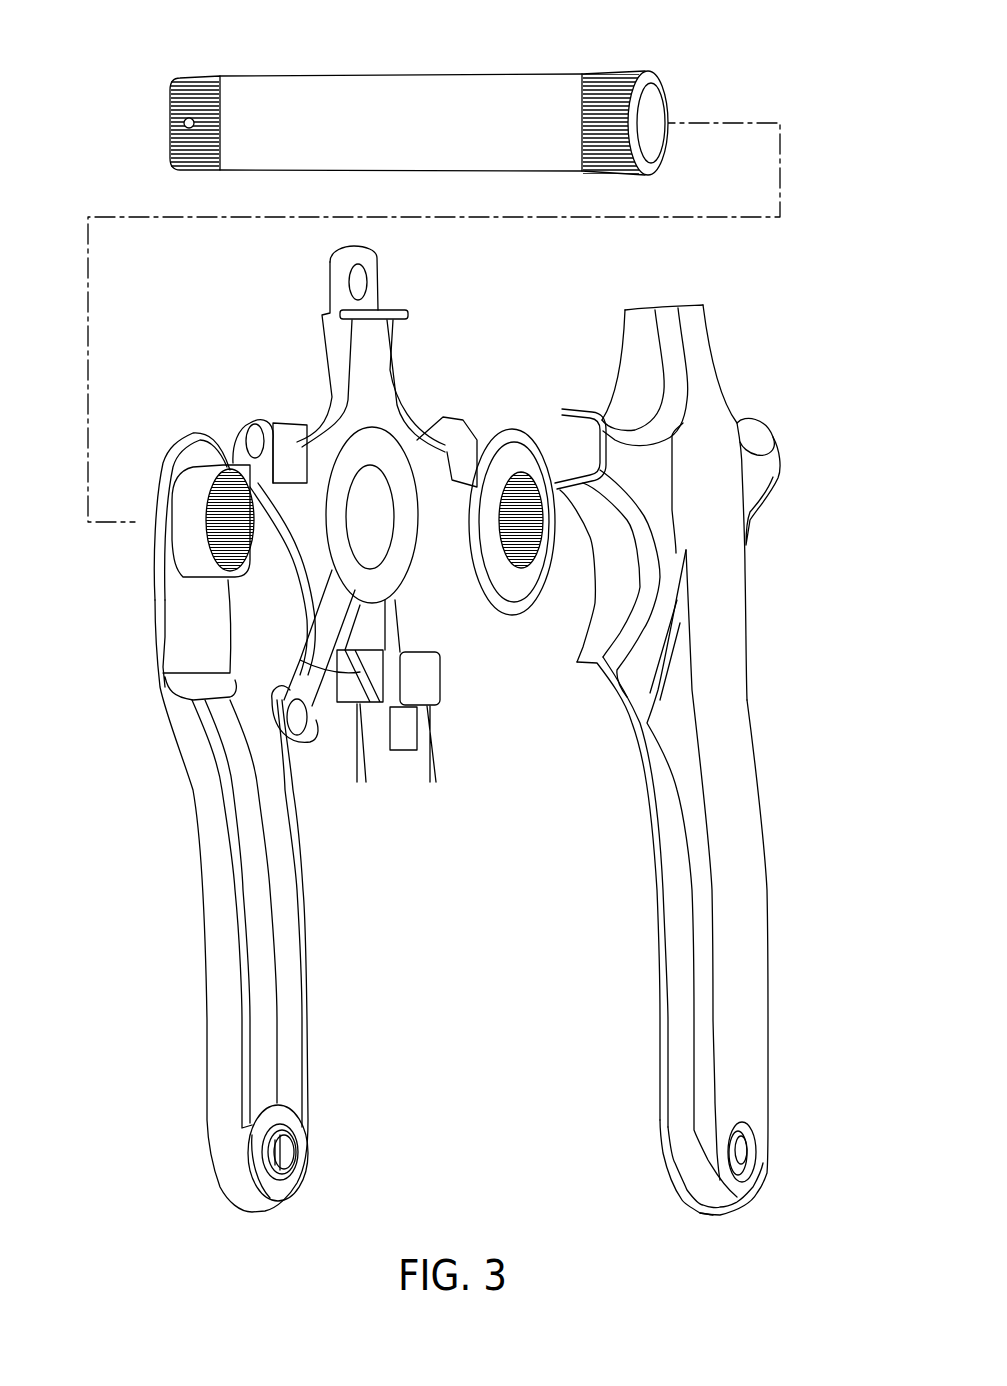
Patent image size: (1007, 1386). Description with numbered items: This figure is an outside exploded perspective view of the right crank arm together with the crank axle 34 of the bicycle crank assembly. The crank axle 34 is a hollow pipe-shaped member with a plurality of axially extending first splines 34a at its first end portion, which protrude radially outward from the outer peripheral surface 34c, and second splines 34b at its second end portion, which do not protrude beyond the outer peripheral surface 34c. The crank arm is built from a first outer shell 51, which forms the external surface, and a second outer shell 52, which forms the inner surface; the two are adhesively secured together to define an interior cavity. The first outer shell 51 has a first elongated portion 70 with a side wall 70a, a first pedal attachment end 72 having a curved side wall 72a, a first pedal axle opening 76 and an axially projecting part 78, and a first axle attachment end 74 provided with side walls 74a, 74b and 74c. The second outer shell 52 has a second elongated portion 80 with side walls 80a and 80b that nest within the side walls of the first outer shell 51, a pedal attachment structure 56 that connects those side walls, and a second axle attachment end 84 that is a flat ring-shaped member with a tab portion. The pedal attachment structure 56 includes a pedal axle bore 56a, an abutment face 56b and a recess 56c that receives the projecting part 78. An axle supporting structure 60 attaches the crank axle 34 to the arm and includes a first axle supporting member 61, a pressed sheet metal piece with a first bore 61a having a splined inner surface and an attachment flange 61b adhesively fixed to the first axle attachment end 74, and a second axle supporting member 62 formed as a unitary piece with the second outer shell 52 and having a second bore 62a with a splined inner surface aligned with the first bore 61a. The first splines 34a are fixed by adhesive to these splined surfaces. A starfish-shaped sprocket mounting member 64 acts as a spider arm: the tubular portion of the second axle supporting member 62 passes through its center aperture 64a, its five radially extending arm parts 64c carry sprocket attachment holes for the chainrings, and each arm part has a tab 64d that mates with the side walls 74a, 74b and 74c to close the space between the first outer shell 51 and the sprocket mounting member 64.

The crank axle 34 is at (420, 92).
The first splines 34a is at (636, 76).
The second splines 34b is at (208, 76).
The outer peripheral surface 34c is at (333, 75).
The first outer shell 51 is at (680, 785).
The second outer shell 52 is at (242, 841).
The pedal attachment structure 56 is at (311, 1156).
The pedal axle bore 56a is at (280, 1141).
The abutment face 56b is at (295, 1200).
The recess 56c is at (292, 1170).
The axle supporting structure 60 is at (528, 532).
The first axle supporting member 61 is at (528, 508).
The first bore 61a is at (522, 562).
The attachment flange 61b is at (505, 582).
The second axle supporting member 62 is at (188, 488).
The second bore 62a is at (248, 545).
The sprocket mounting member 64 is at (364, 524).
The center aperture 64a is at (398, 536).
The arm parts 64c is at (376, 272).
The tab 64d is at (404, 310).
The first elongated portion 70 is at (680, 785).
The side wall 70a is at (682, 900).
The first pedal attachment end 72 is at (755, 1177).
The curved side wall 72a is at (710, 1202).
The first axle attachment end 74 is at (758, 502).
The side wall 74a is at (598, 633).
The side wall 74b is at (640, 352).
The side wall 74c is at (745, 425).
The first pedal axle opening 76 is at (745, 1173).
The projecting part 78 is at (742, 1152).
The second elongated portion 80 is at (269, 914).
The side wall 80a is at (235, 920).
The side wall 80b is at (305, 890).
The second axle attachment end 84 is at (157, 556).